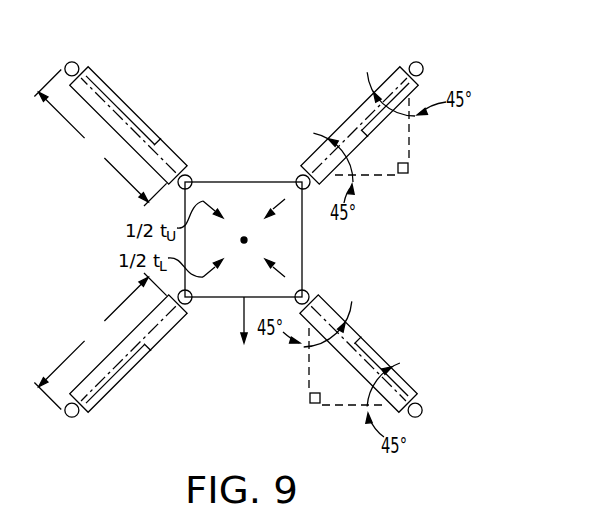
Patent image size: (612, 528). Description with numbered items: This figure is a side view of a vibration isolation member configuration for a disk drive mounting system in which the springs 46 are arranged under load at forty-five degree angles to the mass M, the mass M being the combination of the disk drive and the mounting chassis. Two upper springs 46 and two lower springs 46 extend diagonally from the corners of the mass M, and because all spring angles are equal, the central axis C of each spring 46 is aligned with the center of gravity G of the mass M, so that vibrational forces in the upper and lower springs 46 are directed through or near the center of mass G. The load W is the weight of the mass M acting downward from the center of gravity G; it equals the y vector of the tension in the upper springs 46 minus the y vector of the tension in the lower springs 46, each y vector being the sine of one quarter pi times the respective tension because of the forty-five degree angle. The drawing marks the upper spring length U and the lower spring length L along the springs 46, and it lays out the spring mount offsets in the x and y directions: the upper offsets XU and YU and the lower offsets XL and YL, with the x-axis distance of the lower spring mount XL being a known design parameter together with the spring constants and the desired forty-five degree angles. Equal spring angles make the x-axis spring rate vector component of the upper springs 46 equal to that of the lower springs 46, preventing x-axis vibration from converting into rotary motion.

The springs 46 is at (112, 89).
The mass M is at (233, 182).
The center of gravity G is at (247, 224).
The load W is at (239, 335).
The central axis C is at (160, 143).
The upper spring length U is at (123, 117).
The lower spring length L is at (107, 283).
The upper spring horizontal offset XU is at (371, 185).
The upper spring vertical offset YU is at (424, 131).
The distance in the x axis of the lower spring mount XL is at (348, 415).
The lower spring vertical offset YL is at (296, 359).